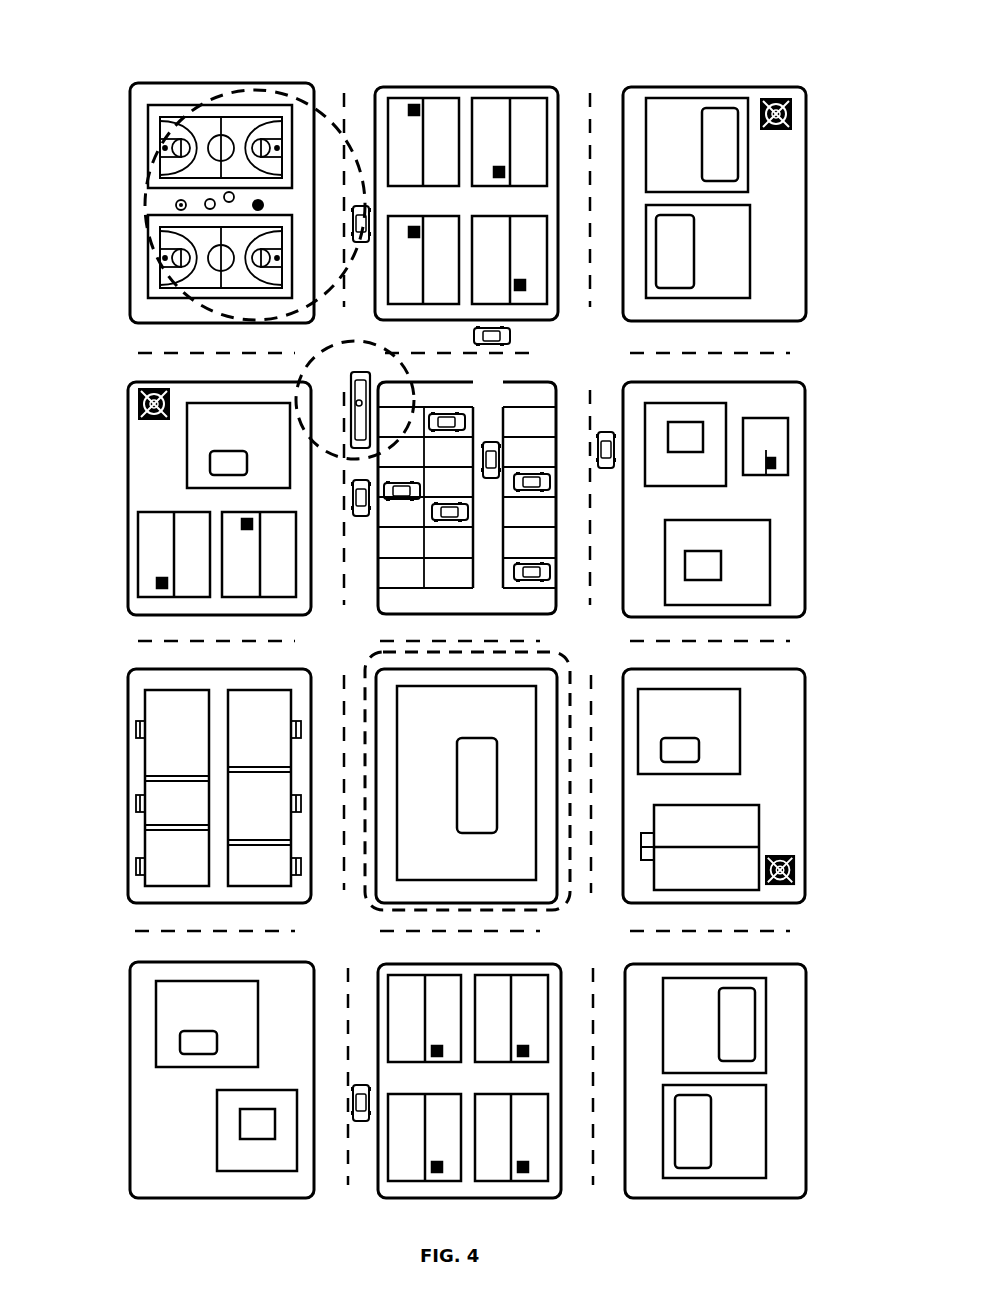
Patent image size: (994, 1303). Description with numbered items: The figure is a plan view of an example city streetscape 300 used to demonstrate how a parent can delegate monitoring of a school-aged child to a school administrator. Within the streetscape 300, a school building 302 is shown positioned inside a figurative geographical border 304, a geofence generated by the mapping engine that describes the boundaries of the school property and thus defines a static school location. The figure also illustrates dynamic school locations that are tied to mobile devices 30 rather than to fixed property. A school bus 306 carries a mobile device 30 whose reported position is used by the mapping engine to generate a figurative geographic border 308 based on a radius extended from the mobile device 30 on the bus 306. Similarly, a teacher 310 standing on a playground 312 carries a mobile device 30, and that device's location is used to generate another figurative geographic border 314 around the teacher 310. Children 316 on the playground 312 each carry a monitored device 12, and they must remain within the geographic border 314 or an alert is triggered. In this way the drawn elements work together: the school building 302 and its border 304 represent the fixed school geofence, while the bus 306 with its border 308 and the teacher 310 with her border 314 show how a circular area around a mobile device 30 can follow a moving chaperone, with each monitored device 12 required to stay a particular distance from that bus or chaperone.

The city streetscape 300 is at (515, 53).
The school building 302 is at (446, 767).
The geographical border 304 is at (370, 653).
The school bus 306 is at (356, 432).
The geographic border 308 is at (464, 343).
The mobile device 30 is at (363, 403).
The teacher 310 is at (260, 203).
The playground 312 is at (190, 93).
The geographic border 314 is at (247, 92).
The monitored device 12 is at (117, 186).
The children 316 is at (178, 205).